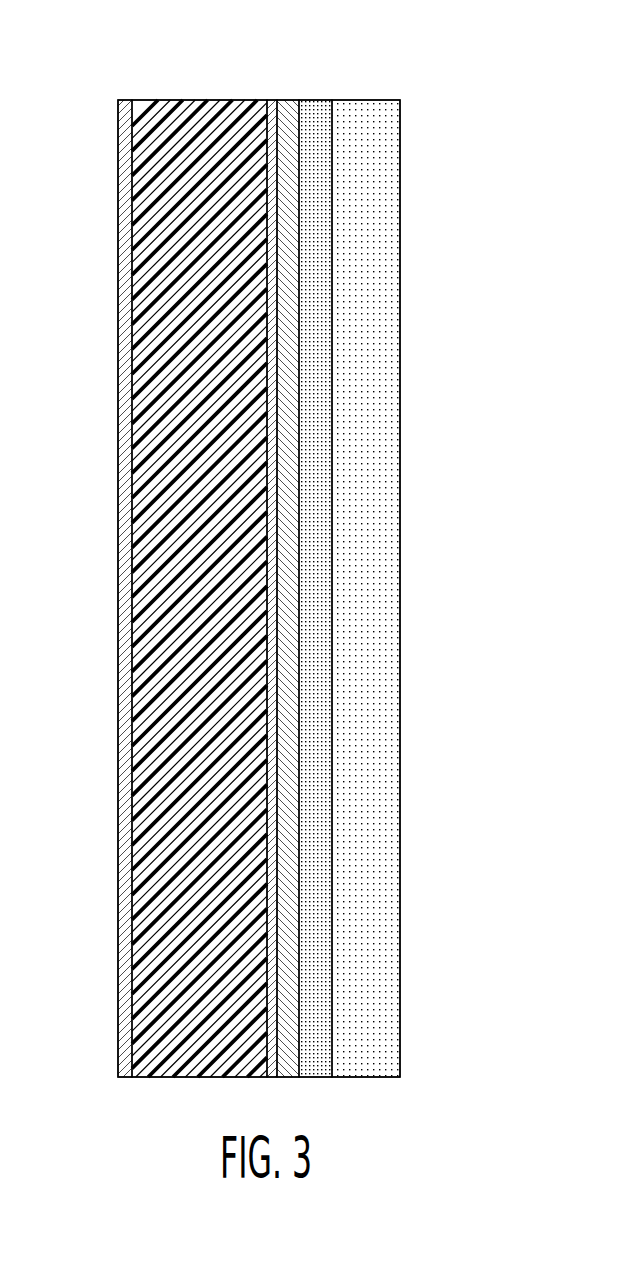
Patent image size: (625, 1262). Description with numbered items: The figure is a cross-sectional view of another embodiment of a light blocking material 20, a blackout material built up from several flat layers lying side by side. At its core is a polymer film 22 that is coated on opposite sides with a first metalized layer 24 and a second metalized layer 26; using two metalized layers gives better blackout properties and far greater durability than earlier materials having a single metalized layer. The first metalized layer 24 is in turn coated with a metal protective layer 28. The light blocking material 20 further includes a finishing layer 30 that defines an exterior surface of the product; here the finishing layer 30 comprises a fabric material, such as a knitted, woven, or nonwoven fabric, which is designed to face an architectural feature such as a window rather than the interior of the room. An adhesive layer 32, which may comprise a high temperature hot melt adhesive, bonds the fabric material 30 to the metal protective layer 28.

The light blocking material 20 is at (458, 135).
The polymer film 22 is at (189, 104).
The first metalized layer 24 is at (272, 100).
The second metalized layer 26 is at (120, 100).
The metal protective layer 28 is at (287, 106).
The finishing layer 30 is at (372, 116).
The adhesive layer 32 is at (322, 106).